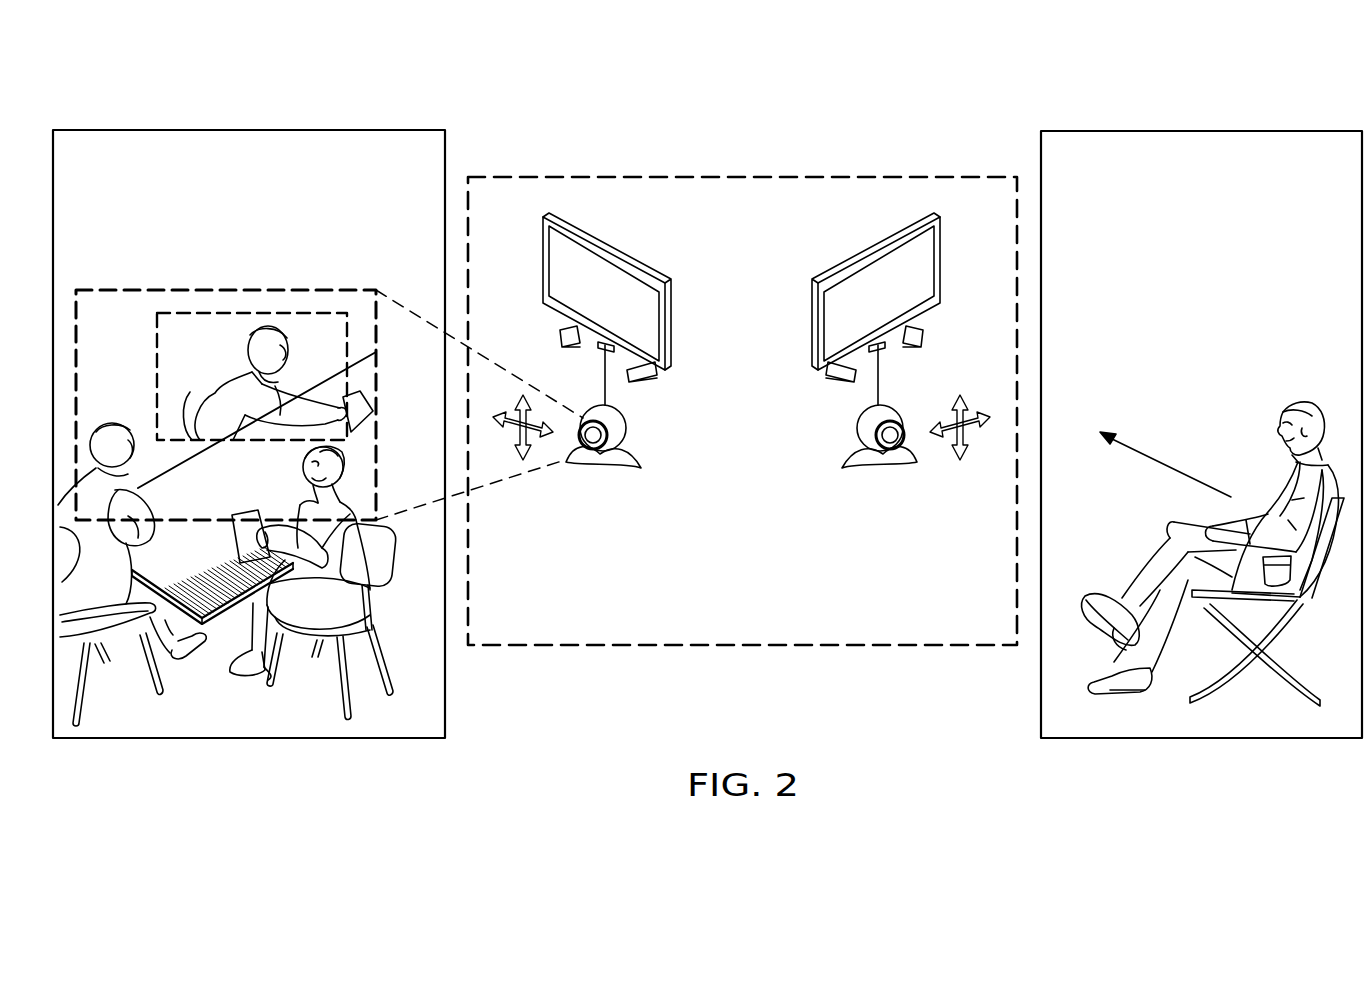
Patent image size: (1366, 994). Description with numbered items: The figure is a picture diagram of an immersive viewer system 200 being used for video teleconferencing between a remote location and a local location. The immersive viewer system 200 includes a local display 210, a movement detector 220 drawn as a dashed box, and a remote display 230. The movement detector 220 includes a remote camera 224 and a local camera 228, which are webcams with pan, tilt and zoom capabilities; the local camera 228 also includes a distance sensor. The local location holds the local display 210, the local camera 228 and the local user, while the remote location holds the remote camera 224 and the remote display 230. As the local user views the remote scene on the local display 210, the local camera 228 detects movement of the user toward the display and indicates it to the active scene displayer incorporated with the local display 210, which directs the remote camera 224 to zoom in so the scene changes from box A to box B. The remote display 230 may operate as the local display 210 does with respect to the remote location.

The immersive viewer system 200 is at (899, 83).
The movement detector 220 is at (800, 177).
The remote display 230 is at (612, 248).
The local display 210 is at (872, 248).
The remote camera 224 is at (600, 470).
The local camera 228 is at (883, 470).